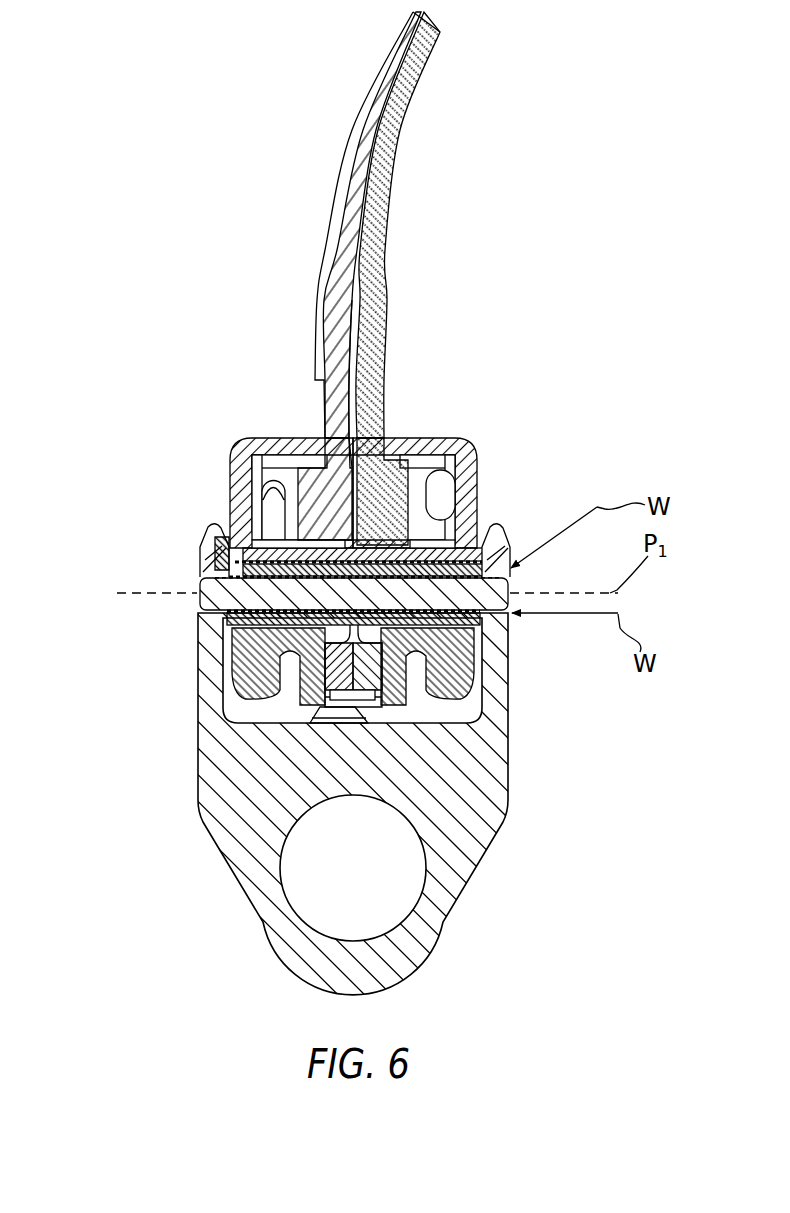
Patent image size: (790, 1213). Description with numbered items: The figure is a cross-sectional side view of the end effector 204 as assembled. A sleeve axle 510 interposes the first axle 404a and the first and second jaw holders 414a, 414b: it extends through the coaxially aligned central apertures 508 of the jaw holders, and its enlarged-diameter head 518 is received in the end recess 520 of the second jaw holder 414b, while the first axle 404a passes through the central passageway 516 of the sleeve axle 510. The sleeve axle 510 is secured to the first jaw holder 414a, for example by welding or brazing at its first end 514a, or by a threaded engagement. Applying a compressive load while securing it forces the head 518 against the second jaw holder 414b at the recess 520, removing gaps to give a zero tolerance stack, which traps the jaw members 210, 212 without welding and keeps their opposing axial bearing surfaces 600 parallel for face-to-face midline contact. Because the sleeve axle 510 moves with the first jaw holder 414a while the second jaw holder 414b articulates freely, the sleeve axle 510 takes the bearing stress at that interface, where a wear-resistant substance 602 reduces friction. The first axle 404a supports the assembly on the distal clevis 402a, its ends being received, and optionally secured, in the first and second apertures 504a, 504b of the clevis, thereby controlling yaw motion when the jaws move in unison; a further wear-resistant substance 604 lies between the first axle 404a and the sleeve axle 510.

The end effector 204 is at (124, 189).
The jaw member 210 is at (388, 193).
The jaw member 212 is at (352, 167).
The first jaw holder 414a is at (440, 440).
The second jaw holder 414b is at (274, 440).
The axial bearing surfaces 600 is at (350, 468).
The sleeve axle 510 is at (430, 553).
The first end 514a is at (472, 553).
The central passageway 516 is at (510, 565).
The enlarged-diameter head 518 is at (222, 537).
The end recess 520 is at (200, 546).
The wear-resistant substance 602 is at (240, 569).
The wear-resistant substance 604 is at (212, 588).
The first axle 404a is at (509, 584).
The first aperture 504a is at (482, 617).
The second aperture 504b is at (228, 618).
The central apertures 508 is at (477, 636).
The distal clevis 402a is at (210, 824).